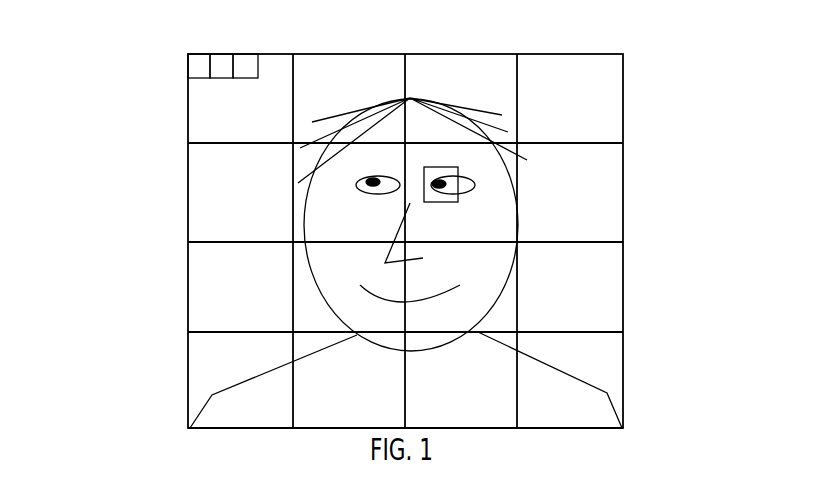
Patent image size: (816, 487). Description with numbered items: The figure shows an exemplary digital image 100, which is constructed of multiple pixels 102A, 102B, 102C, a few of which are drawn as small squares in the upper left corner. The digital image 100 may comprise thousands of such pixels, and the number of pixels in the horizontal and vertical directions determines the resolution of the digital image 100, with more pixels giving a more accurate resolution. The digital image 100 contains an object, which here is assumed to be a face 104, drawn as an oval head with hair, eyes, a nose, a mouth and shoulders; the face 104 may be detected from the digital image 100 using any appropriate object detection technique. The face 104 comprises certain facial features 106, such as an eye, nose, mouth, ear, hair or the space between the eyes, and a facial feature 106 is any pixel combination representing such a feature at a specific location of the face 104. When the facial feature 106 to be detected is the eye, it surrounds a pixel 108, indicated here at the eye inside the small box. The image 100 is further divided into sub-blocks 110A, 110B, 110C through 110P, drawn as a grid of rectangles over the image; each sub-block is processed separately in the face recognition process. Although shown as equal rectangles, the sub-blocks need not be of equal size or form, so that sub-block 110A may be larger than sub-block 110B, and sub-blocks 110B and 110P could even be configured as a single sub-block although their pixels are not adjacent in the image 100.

The digital image 100 is at (118, 210).
The pixel 102A is at (190, 67).
The pixel 102B is at (222, 53).
The pixel 102C is at (245, 53).
The face 104 is at (305, 225).
The facial feature 106 is at (468, 170).
The pixel 108 is at (430, 202).
The sub-block 110A is at (623, 117).
The sub-block 110B is at (623, 212).
The sub-block 110C is at (623, 298).
The sub-block 110P is at (188, 350).